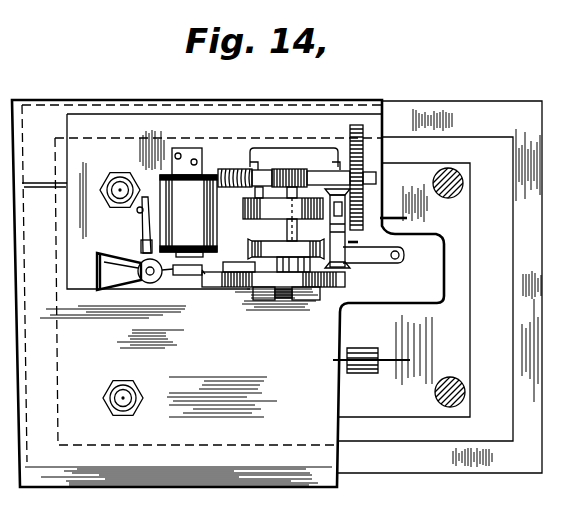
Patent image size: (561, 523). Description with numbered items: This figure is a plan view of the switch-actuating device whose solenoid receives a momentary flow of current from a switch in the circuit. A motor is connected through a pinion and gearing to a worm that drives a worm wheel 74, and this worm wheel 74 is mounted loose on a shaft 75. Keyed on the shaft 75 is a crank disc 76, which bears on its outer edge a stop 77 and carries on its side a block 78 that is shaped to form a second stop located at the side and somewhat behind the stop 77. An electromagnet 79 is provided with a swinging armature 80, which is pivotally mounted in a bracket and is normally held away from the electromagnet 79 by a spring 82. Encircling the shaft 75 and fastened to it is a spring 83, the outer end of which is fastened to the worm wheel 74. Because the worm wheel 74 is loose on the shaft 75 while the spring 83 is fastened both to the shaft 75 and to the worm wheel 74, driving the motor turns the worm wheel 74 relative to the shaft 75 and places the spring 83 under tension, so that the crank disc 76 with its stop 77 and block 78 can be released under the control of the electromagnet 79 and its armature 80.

The worm wheel 74 is at (244, 169).
The shaft 75 is at (288, 229).
The crank disc 76 is at (327, 285).
The stop 77 is at (228, 284).
The block 78 is at (245, 271).
The electromagnet 79 is at (188, 202).
The swinging armature 80 is at (172, 278).
The spring 82 is at (140, 226).
The spring 83 is at (283, 209).